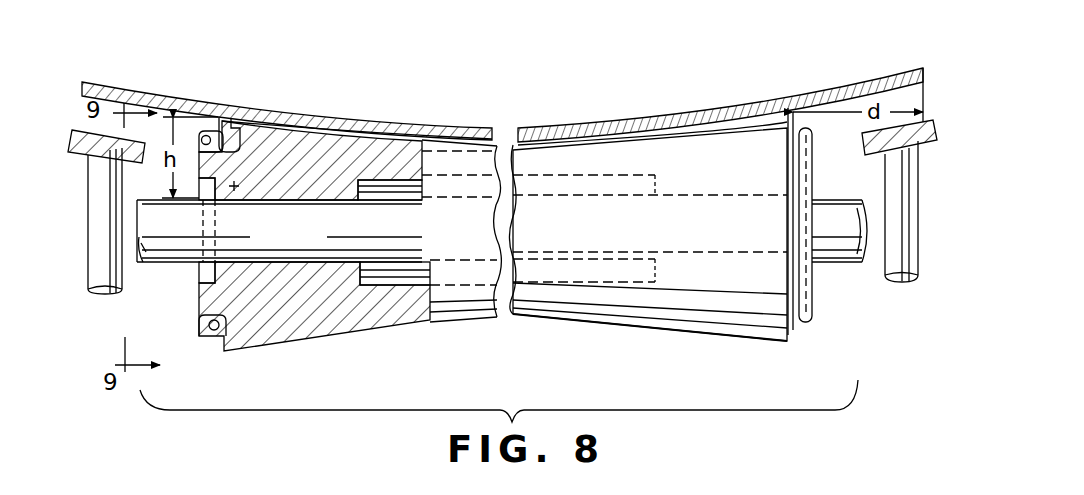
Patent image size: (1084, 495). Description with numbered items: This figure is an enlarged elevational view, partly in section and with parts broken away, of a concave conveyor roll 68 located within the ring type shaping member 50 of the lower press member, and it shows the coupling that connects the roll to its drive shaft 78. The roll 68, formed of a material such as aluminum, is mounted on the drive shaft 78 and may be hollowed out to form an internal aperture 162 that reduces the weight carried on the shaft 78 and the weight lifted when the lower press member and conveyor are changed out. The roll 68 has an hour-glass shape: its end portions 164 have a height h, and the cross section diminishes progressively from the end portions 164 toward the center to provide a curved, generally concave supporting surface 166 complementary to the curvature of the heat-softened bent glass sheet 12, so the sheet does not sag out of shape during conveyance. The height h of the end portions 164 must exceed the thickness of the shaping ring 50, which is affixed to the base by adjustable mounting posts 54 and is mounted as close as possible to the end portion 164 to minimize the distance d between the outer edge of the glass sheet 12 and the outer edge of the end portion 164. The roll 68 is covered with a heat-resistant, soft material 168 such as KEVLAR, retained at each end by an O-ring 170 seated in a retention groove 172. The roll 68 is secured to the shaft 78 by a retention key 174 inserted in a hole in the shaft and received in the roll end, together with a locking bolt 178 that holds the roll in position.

The glass sheet 12 is at (470, 127).
The ring type shaping member 50 is at (73, 128).
The adjustable mounting post 54 is at (105, 280).
The conveyor roll 68 is at (667, 317).
The drive shaft 78 is at (845, 250).
The internal aperture 162 is at (403, 272).
The end portion 164 is at (210, 131).
The concave supporting surface 166 is at (567, 127).
The covering material 168 is at (313, 343).
The O-ring 170 is at (217, 330).
The retention groove 172 is at (236, 117).
The retention key 174 is at (205, 278).
The locking bolt 178 is at (245, 191).